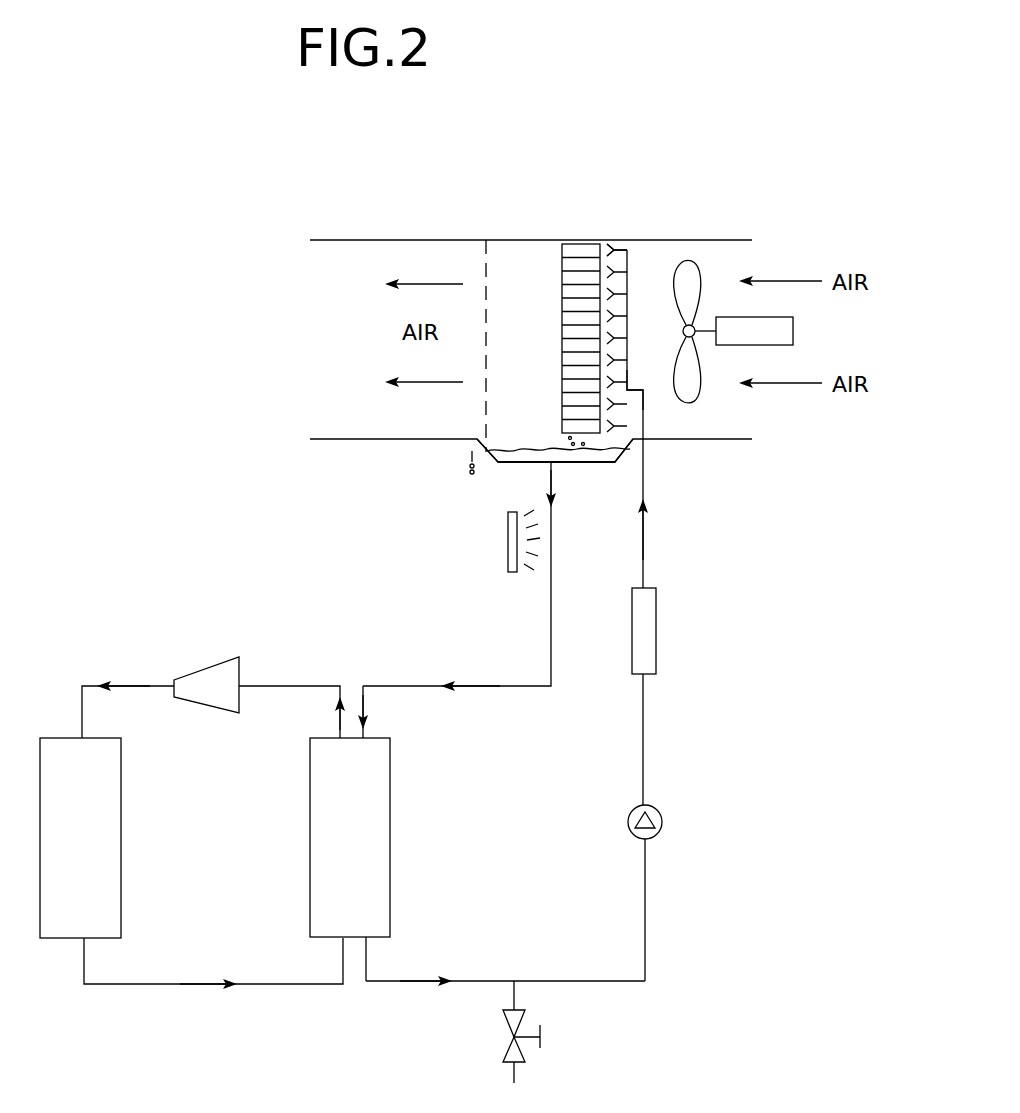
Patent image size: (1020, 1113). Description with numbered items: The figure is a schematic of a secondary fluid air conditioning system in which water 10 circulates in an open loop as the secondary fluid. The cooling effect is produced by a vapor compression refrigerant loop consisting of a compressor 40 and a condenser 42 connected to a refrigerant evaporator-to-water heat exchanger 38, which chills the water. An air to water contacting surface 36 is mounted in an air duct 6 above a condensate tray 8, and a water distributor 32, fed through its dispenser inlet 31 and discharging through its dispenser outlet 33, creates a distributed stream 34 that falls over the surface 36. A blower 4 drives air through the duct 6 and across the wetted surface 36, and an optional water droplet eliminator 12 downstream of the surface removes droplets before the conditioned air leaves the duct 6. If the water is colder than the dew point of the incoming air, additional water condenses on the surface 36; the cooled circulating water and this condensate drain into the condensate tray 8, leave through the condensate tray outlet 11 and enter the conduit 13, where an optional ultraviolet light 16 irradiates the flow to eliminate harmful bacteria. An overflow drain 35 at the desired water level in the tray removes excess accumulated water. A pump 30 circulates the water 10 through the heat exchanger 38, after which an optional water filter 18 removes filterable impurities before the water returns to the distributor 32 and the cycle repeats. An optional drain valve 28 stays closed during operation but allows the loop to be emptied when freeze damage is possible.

The blower 4 is at (696, 390).
The air duct 6 is at (372, 440).
The condensate tray 8 is at (590, 464).
The water 10 is at (520, 448).
The condensate tray outlet 11 is at (542, 464).
The water droplet eliminator 12 is at (488, 268).
The conduit 13 is at (551, 617).
The ultraviolet light 16 is at (508, 537).
The water filter 18 is at (656, 632).
The drain valve 28 is at (512, 1037).
The pump 30 is at (664, 814).
The dispenser inlet 31 is at (636, 392).
The water distributor 32 is at (628, 276).
The dispenser outlet 33 is at (620, 273).
The distributed stream 34 is at (612, 250).
The overflow drain 35 is at (472, 453).
The air to water contacting surface 36 is at (562, 358).
The refrigerant evaporator-to-water heat exchanger 38 is at (390, 856).
The compressor 40 is at (192, 668).
The condenser 42 is at (121, 863).